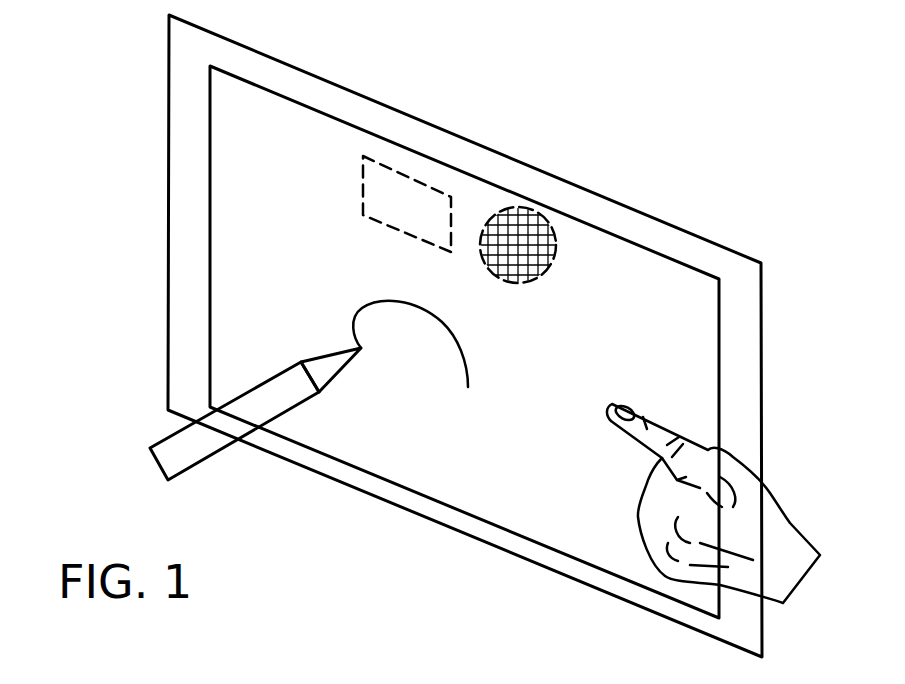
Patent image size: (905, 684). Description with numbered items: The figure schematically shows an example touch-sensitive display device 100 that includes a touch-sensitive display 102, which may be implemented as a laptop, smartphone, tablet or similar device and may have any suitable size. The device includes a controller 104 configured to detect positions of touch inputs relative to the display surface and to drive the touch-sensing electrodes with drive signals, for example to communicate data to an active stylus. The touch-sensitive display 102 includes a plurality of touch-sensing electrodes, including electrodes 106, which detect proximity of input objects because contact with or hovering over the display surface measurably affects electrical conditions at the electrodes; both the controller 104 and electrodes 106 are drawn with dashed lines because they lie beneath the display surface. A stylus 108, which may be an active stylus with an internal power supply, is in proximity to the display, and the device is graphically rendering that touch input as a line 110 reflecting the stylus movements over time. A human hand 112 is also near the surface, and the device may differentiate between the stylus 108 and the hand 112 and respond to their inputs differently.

The touch-sensitive display device 100 is at (534, 86).
The touch-sensitive display 102 is at (210, 152).
The controller 104 is at (388, 214).
The touch-sensing electrodes 106 is at (546, 220).
The stylus 108 is at (151, 448).
The line 110 is at (359, 313).
The human hand 112 is at (796, 526).